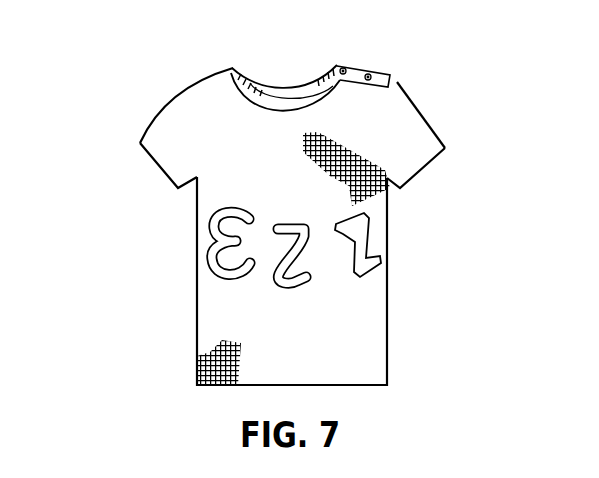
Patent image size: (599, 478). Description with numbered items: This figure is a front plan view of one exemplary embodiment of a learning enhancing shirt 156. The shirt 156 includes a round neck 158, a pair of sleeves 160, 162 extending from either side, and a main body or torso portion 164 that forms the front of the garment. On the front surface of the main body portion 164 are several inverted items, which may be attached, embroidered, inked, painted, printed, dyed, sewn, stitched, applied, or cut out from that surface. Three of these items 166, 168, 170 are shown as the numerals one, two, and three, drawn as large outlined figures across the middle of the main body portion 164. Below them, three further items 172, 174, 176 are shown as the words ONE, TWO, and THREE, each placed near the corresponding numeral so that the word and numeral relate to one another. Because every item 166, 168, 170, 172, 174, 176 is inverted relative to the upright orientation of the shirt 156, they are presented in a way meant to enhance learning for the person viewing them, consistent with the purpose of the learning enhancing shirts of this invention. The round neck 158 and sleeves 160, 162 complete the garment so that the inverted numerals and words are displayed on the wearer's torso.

The shirt 156 is at (398, 91).
The round neck 158 is at (262, 81).
The sleeve 160 is at (415, 143).
The sleeve 162 is at (160, 133).
The main body portion 164 is at (360, 362).
The inverted item 166 is at (366, 238).
The inverted item 168 is at (290, 222).
The inverted item 170 is at (254, 177).
The inverted item 172 is at (368, 316).
The inverted item 174 is at (285, 338).
The inverted item 176 is at (221, 319).